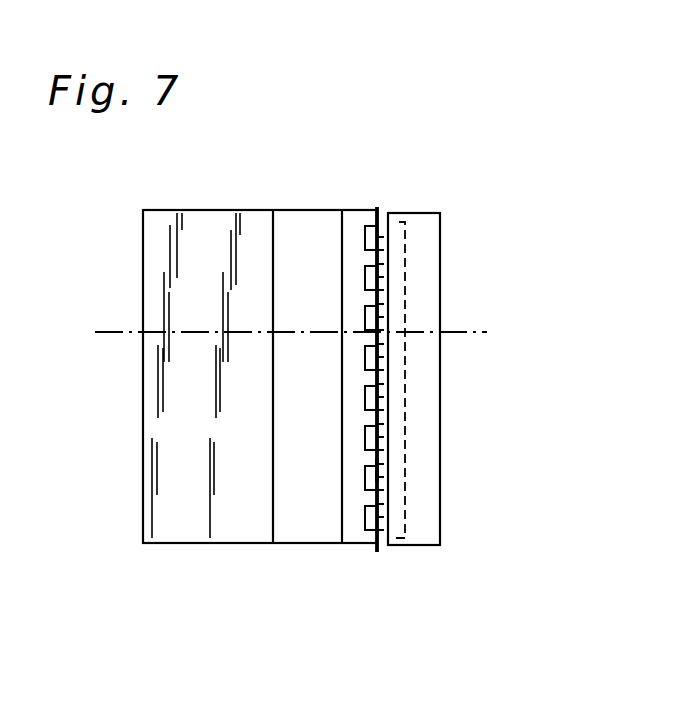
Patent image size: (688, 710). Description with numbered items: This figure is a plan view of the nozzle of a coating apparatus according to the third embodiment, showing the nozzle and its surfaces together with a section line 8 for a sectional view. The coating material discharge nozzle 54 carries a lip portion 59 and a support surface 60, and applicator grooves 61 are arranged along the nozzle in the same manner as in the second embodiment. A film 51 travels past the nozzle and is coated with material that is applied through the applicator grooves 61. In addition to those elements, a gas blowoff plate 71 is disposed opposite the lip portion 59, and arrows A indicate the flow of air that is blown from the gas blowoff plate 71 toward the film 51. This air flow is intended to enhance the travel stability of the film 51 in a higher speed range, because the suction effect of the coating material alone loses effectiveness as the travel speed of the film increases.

The coating material discharge nozzle 54 is at (143, 302).
The lip portion 59 is at (353, 544).
The support surface 60 is at (376, 214).
The applicator grooves 61 is at (379, 224).
The film 51 is at (377, 549).
The gas blowoff plate 71 is at (403, 388).
The flow of air A is at (383, 470).
The section line 8- 8 is at (102, 292).